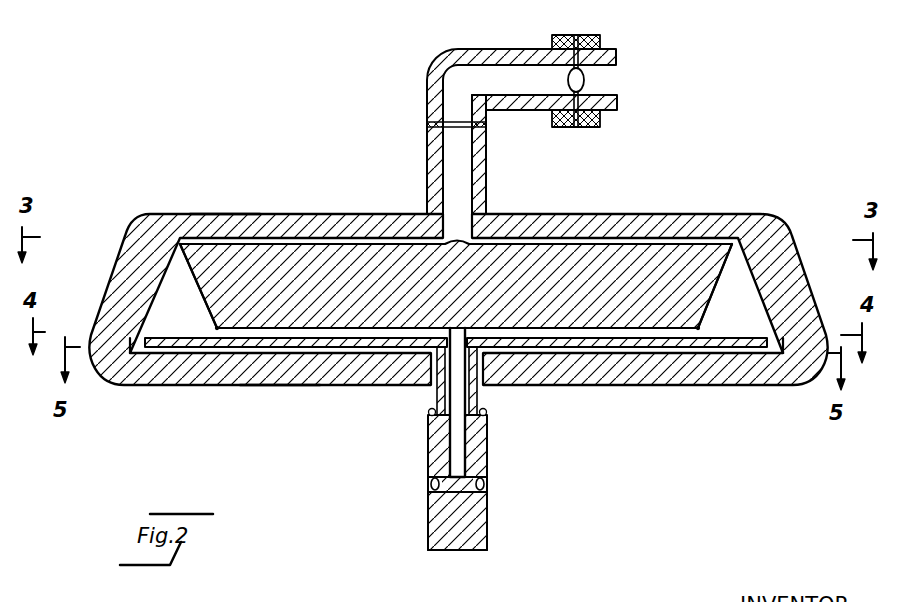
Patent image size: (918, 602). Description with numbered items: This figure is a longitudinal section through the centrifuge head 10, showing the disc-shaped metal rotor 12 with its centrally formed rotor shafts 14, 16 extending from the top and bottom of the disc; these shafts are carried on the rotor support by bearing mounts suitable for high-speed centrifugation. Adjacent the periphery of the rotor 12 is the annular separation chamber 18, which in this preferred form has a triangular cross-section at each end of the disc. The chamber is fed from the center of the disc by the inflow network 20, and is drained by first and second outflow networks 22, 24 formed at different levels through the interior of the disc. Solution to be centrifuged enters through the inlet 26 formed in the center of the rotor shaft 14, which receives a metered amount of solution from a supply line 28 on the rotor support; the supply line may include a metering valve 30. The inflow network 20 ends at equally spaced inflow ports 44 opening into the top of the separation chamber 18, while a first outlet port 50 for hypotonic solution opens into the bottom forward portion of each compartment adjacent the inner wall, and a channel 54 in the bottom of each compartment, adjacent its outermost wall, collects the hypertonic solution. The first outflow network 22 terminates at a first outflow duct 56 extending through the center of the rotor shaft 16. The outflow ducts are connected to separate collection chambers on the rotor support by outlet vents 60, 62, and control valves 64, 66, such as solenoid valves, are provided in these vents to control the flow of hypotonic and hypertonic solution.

The centrifuge head 10 is at (738, 170).
The rotor 12 is at (663, 216).
The rotor shaft 14 is at (427, 157).
The rotor shaft 16 is at (457, 551).
The separation chamber 18 is at (727, 290).
The inflow network 20 is at (307, 242).
The first outflow network 22 is at (551, 340).
The second outflow network 24 is at (273, 354).
The inlet 26 is at (466, 193).
The supply line 28 is at (523, 108).
The metering valve 30 is at (590, 80).
The inflow port 44 is at (198, 215).
The first outlet port 50 is at (217, 327).
The channel 54 is at (129, 344).
The first outflow duct 56 is at (458, 348).
The outlet vent 60 is at (430, 423).
The outlet vent 62 is at (452, 493).
The control valve 64 is at (428, 412).
The control valve 66 is at (428, 484).